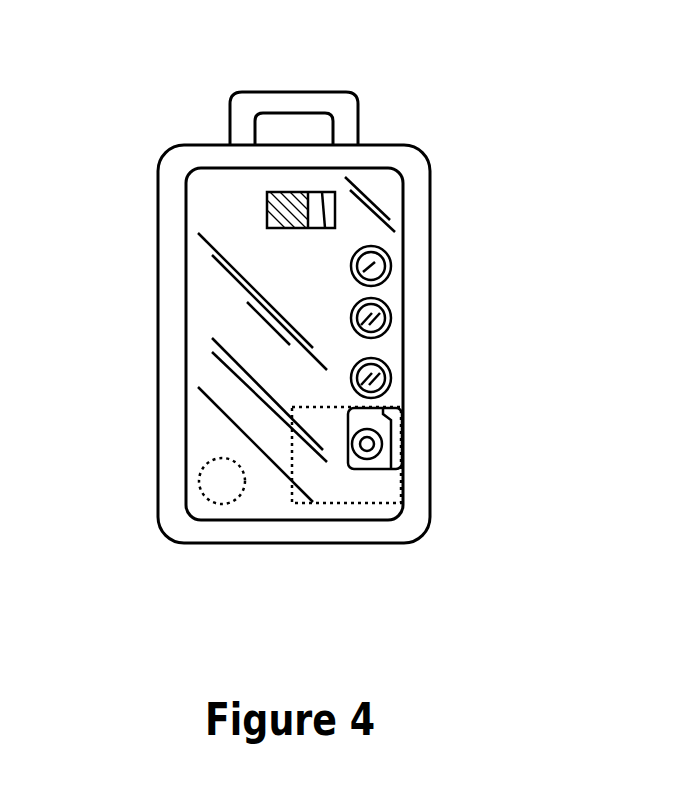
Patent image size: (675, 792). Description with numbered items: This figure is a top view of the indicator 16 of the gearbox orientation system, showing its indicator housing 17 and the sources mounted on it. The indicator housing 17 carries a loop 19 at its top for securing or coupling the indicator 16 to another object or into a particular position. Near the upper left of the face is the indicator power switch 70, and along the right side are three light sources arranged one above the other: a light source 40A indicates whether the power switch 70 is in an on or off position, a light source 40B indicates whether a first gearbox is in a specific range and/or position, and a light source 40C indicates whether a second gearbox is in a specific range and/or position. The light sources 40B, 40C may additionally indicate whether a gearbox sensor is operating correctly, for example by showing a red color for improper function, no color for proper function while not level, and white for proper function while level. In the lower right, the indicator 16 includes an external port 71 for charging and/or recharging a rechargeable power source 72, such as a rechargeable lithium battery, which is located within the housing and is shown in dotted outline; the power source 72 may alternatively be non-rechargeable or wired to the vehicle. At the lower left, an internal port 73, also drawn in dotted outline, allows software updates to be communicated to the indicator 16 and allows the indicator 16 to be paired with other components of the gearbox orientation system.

The indicator 16 is at (93, 106).
The indicator housing 17 is at (420, 150).
The loop 19 is at (345, 105).
The indicator power switch 70 is at (267, 207).
The light source 40A is at (391, 259).
The light source 40B is at (391, 318).
The light source 40C is at (391, 380).
The external port 71 is at (387, 460).
The rechargeable power source 72 is at (346, 458).
The internal port 73 is at (222, 481).